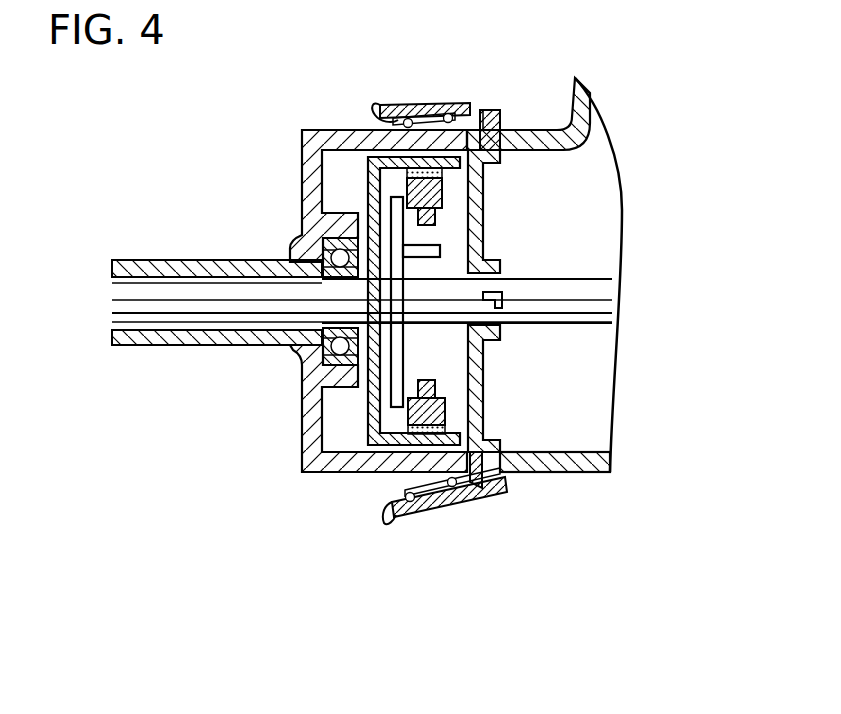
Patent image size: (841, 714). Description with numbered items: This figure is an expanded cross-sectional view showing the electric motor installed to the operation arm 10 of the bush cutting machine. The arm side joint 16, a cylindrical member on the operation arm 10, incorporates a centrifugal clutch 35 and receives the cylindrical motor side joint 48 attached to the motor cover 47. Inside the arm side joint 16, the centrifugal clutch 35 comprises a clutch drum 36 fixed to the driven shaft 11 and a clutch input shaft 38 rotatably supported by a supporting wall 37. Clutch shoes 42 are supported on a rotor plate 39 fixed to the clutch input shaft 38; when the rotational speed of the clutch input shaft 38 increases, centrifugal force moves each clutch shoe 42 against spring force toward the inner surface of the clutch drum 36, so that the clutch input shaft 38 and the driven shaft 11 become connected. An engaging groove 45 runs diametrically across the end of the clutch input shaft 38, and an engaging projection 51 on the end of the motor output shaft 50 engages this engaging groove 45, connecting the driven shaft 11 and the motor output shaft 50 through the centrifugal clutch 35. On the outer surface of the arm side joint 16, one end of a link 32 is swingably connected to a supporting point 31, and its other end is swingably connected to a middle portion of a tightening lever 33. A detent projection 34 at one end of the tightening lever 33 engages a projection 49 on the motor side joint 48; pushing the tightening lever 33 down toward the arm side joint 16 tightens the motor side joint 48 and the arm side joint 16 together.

The operation arm 10 is at (165, 261).
The driven shaft 11 is at (123, 295).
The arm side joint 16 is at (313, 471).
The supporting point 31 is at (448, 117).
The link 32 is at (418, 106).
The tightening lever 33 is at (388, 108).
The detent projection 34 is at (490, 108).
The centrifugal clutch 35 is at (348, 418).
The clutch drum 36 is at (372, 196).
The supporting wall 37 is at (483, 203).
The clutch input shaft 38 is at (442, 306).
The rotor plate 39 is at (397, 378).
The clutch shoe 42 is at (408, 185).
The engaging groove 45 is at (492, 300).
The motor cover 47 is at (580, 100).
The motor side joint 48 is at (585, 463).
The projection 49 is at (480, 122).
The motor output shaft 50 is at (598, 297).
The engaging projection 51 is at (550, 317).